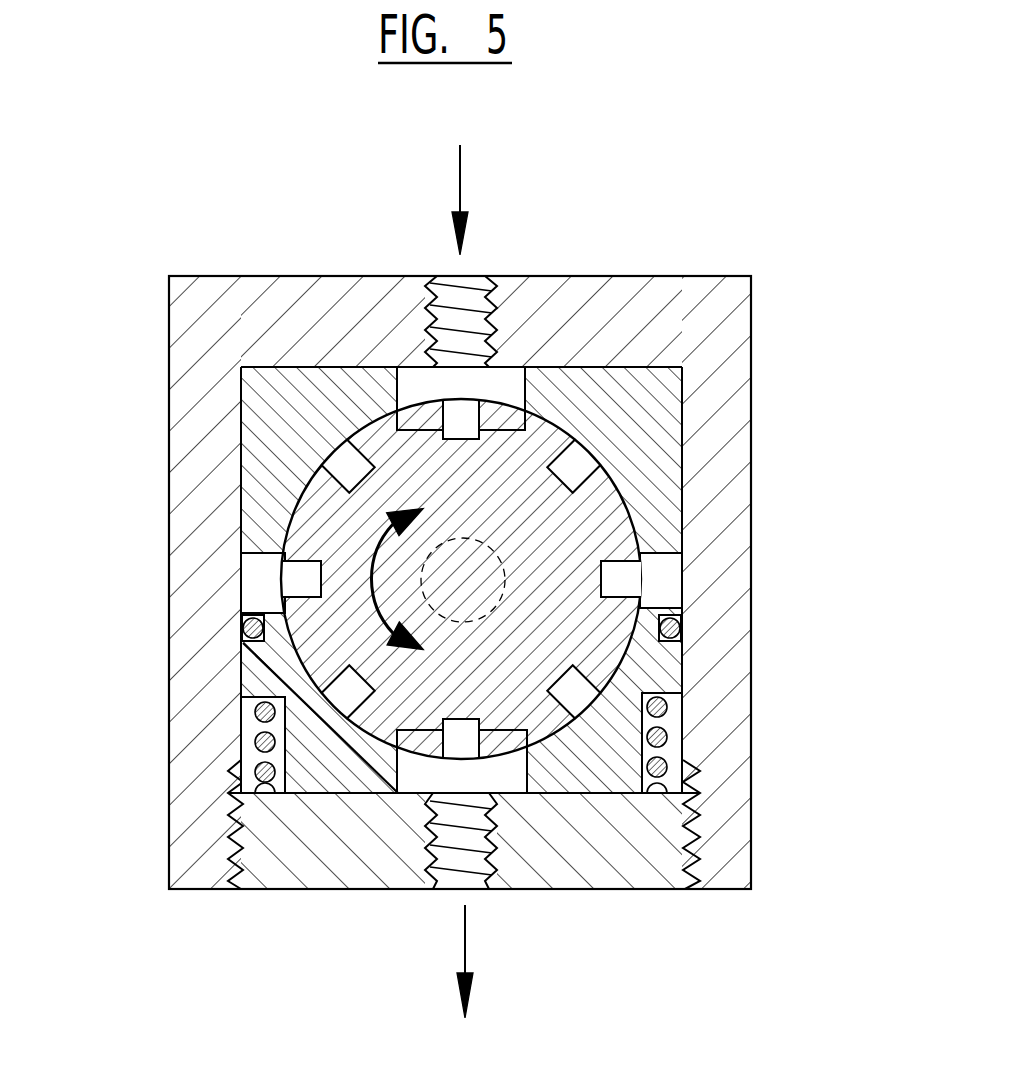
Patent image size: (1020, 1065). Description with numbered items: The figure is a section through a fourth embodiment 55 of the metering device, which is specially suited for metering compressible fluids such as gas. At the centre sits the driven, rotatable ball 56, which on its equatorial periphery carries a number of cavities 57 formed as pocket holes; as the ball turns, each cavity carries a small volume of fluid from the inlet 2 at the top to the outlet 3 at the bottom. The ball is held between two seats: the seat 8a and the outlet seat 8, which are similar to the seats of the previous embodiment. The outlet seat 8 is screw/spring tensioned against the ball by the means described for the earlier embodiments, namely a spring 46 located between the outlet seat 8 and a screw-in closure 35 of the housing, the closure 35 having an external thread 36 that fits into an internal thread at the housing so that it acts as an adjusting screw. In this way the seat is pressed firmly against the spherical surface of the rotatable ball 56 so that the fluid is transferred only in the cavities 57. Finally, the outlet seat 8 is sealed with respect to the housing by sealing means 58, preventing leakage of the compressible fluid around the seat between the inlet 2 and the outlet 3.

The inlet 2 is at (460, 288).
The outlet 3 is at (455, 875).
The outlet seat 8 is at (590, 760).
The seat 8a is at (640, 395).
The closure 35 is at (348, 845).
The external thread 36 is at (695, 830).
The spring 46 is at (263, 710).
The embodiment 55 is at (692, 244).
The rotatable ball 56 is at (580, 515).
The cavities 57 is at (642, 558).
The sealing means 58 is at (682, 619).